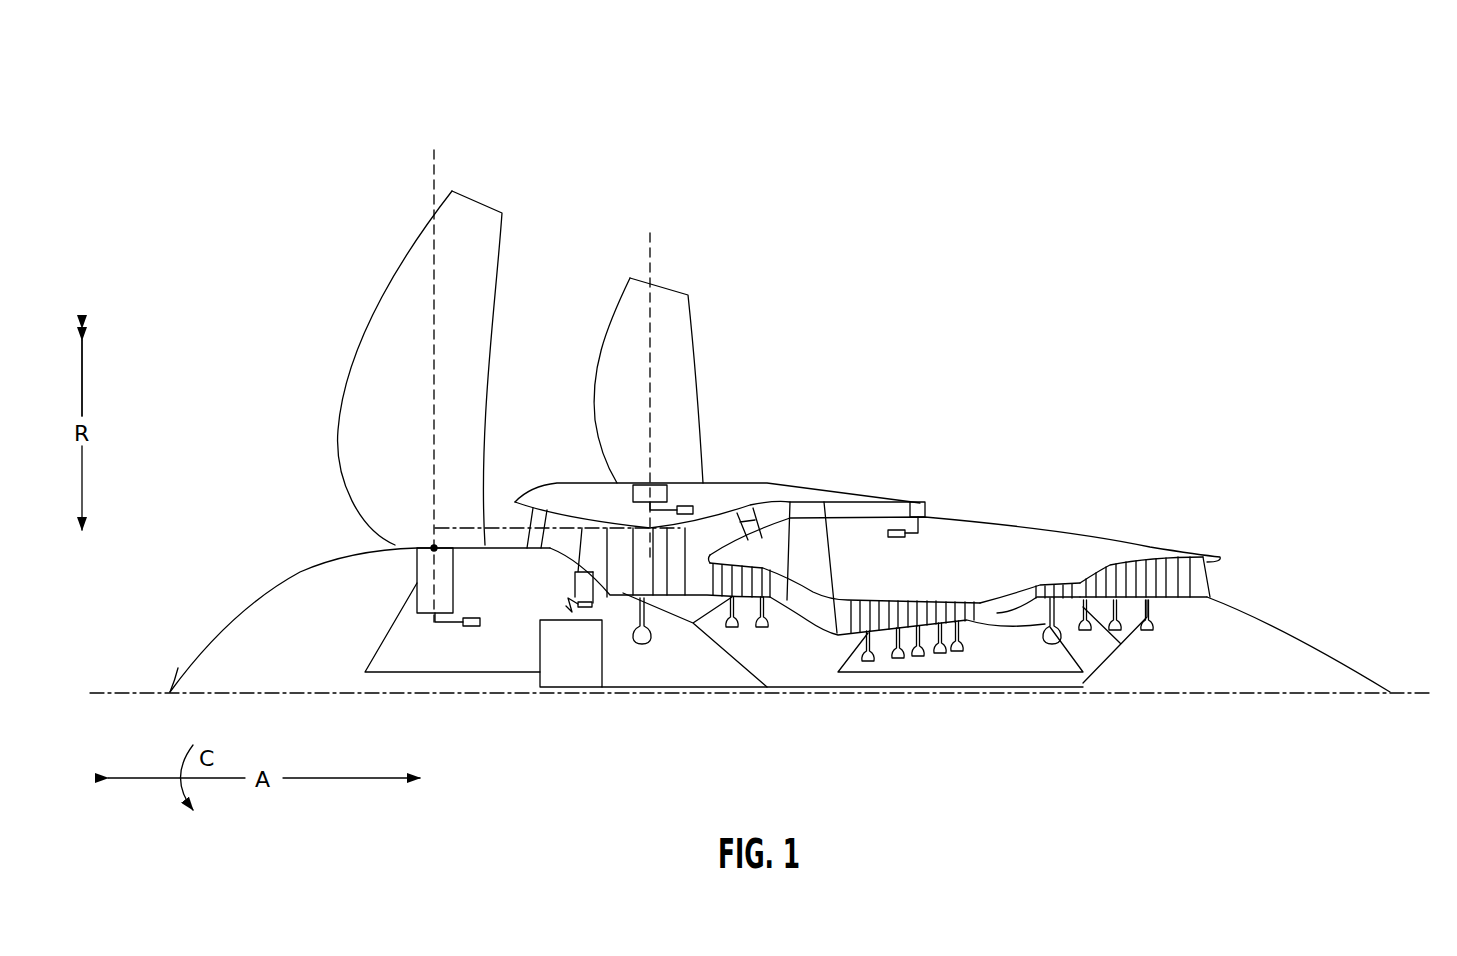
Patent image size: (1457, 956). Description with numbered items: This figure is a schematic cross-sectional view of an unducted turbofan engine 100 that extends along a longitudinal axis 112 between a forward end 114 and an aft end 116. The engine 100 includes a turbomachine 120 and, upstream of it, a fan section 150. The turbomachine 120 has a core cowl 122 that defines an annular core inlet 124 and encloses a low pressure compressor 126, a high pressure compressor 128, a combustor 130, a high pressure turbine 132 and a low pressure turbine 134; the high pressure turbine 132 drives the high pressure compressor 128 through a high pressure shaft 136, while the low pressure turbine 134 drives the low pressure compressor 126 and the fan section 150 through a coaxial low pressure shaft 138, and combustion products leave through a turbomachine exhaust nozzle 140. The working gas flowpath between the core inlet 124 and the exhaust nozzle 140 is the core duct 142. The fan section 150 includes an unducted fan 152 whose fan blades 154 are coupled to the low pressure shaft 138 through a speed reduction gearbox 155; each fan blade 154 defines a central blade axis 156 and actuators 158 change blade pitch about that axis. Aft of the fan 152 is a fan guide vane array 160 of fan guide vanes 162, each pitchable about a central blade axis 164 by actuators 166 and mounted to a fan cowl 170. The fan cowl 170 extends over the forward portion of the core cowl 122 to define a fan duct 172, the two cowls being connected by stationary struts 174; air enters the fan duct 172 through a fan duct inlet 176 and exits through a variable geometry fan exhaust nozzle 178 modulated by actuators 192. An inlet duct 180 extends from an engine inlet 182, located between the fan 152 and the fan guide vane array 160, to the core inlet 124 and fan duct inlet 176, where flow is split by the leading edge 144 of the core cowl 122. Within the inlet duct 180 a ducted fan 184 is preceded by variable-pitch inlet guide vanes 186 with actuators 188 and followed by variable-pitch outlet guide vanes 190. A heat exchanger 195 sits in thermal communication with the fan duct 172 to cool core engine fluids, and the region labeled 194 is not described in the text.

The engine 100 is at (1000, 318).
The longitudinal axis 112 is at (1428, 706).
The forward end 114 is at (170, 690).
The aft end 116 is at (1390, 690).
The turbomachine 120 is at (948, 582).
The core cowl 122 is at (928, 518).
The core inlet 124 is at (705, 578).
The low pressure compressor 126 is at (746, 625).
The high pressure compressor 128 is at (932, 647).
The combustor 130 is at (992, 629).
The high pressure turbine 132 is at (1056, 577).
The low pressure turbine 134 is at (1125, 556).
The high pressure shaft 136 is at (1062, 676).
The low pressure shaft 138 is at (378, 652).
The turbomachine exhaust nozzle 140 is at (1190, 578).
The core duct 142 is at (1014, 593).
The leading edge of the core cowl 144 is at (697, 589).
The fan section 150 is at (320, 381).
The fan 152 is at (376, 381).
The fan blade 154 is at (385, 298).
The speed reduction gearbox 155 is at (572, 667).
The central blade axis 156 is at (434, 178).
The actuator 158 is at (472, 618).
The fan guide vane array 160 is at (648, 346).
The fan guide vane 162 is at (663, 371).
The central blade axis 164 is at (650, 257).
The actuator 166 is at (698, 512).
The fan cowl 170 is at (745, 497).
The fan duct 172 is at (781, 505).
The stationary strut 174 is at (811, 550).
The fan duct inlet 176 is at (700, 552).
The fan exhaust nozzle 178 is at (918, 501).
The inlet duct 180 is at (623, 596).
The engine inlet 182 is at (512, 520).
The ducted fan 184 is at (592, 544).
The inlet guide vane 186 is at (577, 530).
The actuator 188 is at (566, 600).
The outlet guide vane 190 is at (672, 532).
The actuator 192 is at (893, 537).
The bypass passage 194 is at (851, 396).
The heat exchanger 195 is at (766, 595).